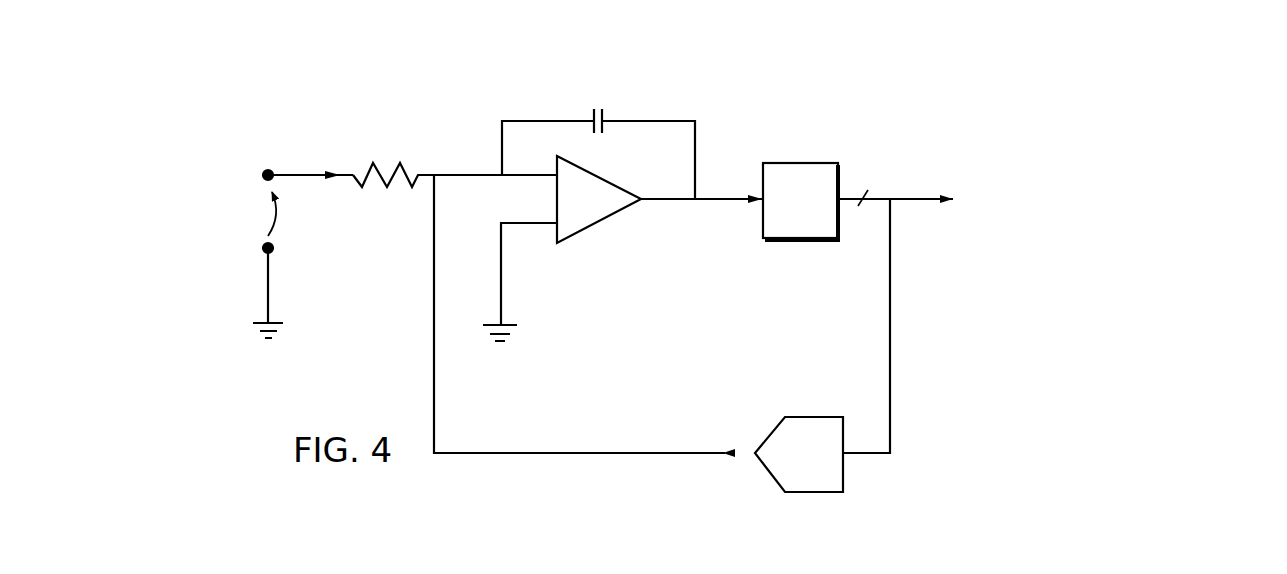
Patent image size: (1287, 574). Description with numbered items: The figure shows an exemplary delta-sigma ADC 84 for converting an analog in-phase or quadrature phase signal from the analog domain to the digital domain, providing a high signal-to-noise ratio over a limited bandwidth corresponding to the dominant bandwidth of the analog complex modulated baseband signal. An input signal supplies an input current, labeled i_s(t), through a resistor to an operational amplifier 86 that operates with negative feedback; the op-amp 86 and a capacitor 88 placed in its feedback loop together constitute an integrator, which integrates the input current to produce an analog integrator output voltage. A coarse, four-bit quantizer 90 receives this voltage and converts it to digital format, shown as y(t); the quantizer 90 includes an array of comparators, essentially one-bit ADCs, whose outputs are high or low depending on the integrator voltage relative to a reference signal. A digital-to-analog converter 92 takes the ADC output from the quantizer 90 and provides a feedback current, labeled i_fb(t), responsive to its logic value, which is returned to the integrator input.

The delta-sigma ADC 84 is at (814, 88).
The operational amplifier 86 is at (598, 222).
The capacitor 88 is at (604, 116).
The quantizer 90 is at (801, 240).
The digital-to-analog converter 92 is at (813, 492).